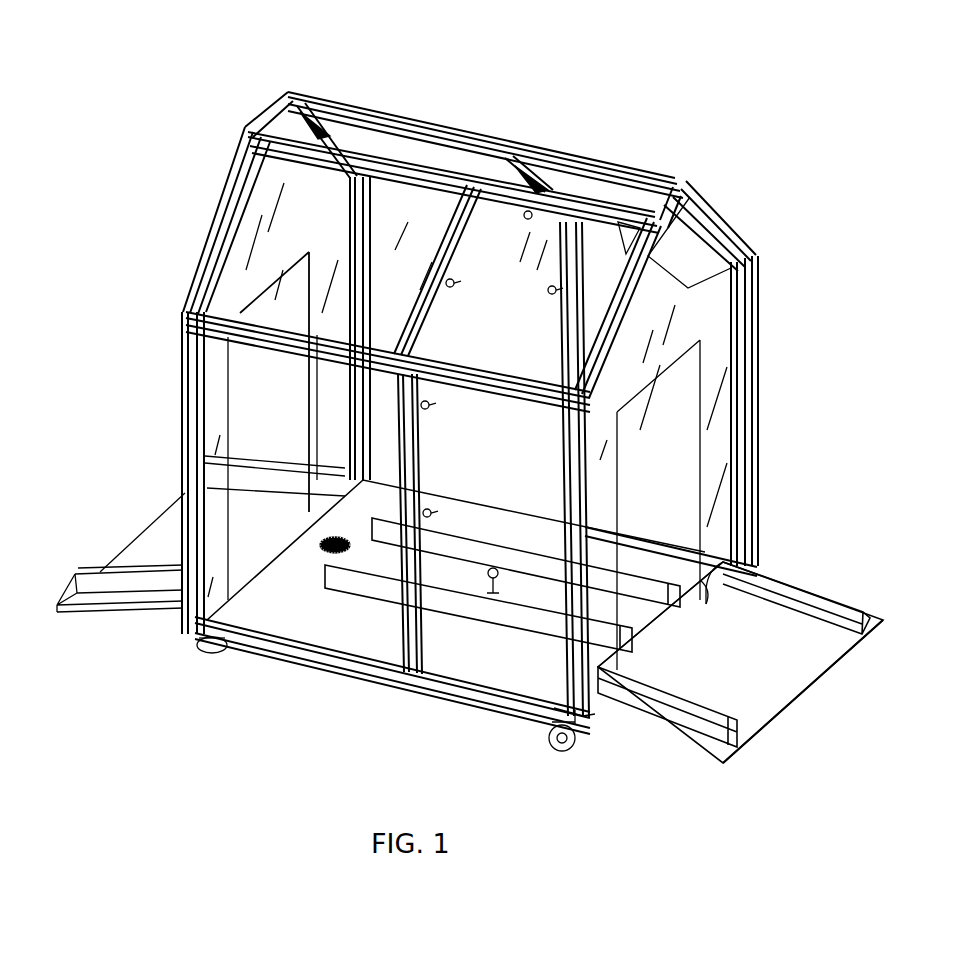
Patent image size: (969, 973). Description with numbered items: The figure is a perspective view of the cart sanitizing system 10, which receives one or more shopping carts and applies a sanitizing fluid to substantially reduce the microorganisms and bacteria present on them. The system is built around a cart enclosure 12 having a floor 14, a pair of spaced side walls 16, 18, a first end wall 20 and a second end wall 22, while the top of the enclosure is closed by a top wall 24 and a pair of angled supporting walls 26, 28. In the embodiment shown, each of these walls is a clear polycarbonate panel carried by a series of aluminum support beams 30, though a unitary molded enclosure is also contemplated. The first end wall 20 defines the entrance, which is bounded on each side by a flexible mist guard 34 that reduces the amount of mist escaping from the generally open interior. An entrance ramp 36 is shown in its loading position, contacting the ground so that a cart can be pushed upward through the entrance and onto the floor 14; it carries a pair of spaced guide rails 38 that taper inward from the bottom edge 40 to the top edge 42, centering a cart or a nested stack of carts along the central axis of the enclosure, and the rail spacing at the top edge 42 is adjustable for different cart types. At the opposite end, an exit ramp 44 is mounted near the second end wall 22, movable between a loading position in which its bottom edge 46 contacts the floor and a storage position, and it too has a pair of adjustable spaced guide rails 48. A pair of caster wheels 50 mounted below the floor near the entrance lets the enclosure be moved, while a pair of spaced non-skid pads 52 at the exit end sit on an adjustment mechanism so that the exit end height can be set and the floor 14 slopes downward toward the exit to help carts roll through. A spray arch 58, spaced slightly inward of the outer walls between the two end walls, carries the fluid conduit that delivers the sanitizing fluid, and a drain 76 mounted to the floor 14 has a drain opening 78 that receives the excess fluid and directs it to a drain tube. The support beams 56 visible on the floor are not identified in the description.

The cart sanitizing system 10 is at (528, 104).
The cart enclosure 12 is at (332, 82).
The floor 14 is at (535, 592).
The side wall 16 is at (522, 447).
The side wall 18 is at (758, 404).
The first end wall 20 is at (728, 514).
The second end wall 22 is at (272, 180).
The top wall 24 is at (612, 197).
The angled supporting wall 26 is at (392, 215).
The angled supporting wall 28 is at (718, 213).
The support beam 30 is at (195, 383).
The mist guard 34 is at (719, 337).
The entrance ramp 36 is at (761, 701).
The guide rail 38 is at (805, 586).
The bottom edge 40 is at (828, 672).
The top edge 42 is at (667, 632).
The exit ramp 44 is at (132, 618).
The bottom edge 46 is at (127, 543).
The guide rail 48 is at (265, 462).
The caster wheel 50 is at (549, 733).
The non-skid pad 52 is at (217, 655).
The support beam 56 is at (467, 557).
The spray arch 58 is at (424, 443).
The drain 76 is at (340, 530).
The drain opening 78 is at (325, 556).